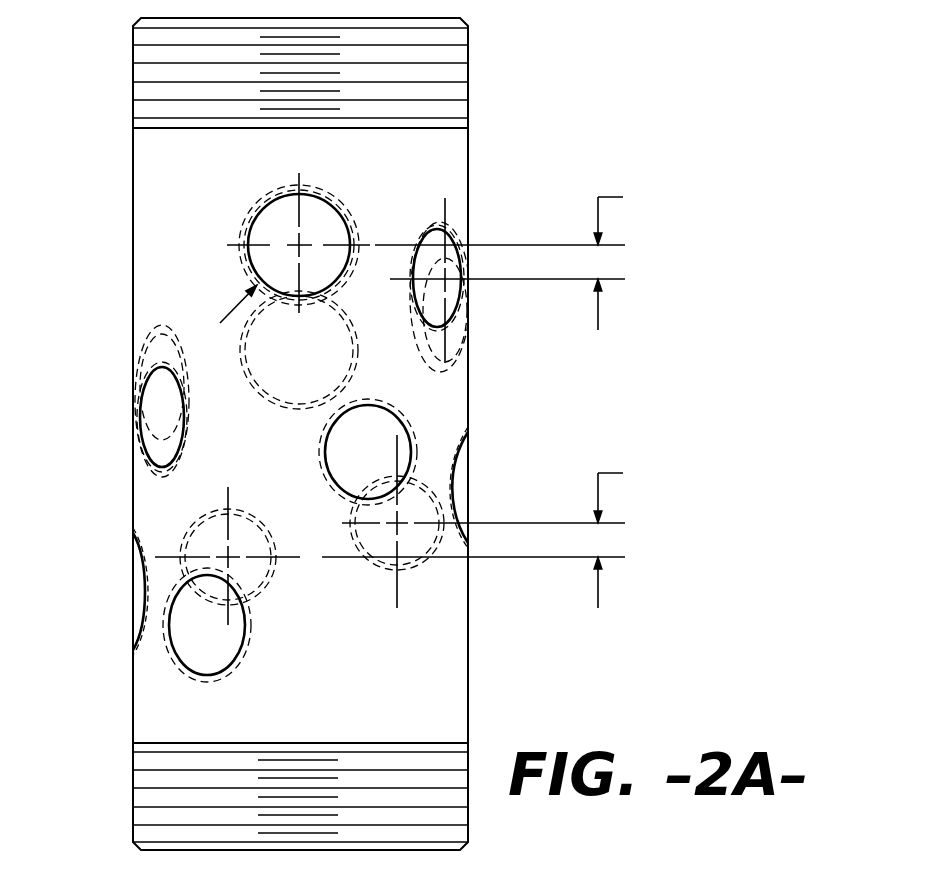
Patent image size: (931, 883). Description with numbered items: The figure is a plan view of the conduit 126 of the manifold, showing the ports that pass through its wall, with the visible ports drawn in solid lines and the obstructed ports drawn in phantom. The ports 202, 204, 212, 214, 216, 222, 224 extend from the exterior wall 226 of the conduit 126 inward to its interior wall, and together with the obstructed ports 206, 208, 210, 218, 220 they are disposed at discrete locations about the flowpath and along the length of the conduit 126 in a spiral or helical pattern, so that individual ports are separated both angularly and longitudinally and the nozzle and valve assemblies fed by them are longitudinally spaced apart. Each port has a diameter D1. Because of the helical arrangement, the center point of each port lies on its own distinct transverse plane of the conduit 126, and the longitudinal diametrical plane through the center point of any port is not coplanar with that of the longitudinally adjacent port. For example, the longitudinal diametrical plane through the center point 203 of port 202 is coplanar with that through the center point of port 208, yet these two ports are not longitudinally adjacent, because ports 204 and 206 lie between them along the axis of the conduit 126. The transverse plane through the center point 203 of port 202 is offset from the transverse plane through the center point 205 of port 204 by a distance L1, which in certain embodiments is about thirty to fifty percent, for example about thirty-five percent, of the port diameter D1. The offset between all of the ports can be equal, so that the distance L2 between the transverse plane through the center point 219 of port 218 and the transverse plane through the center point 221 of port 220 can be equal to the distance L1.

The conduit 126 is at (512, 74).
The port 202 is at (250, 227).
The center point of port 202 203 is at (297, 240).
The port 204 is at (456, 240).
The center point of port 204 205 is at (457, 243).
The obstructed port 206 is at (453, 347).
The obstructed port 208 is at (240, 348).
The obstructed port 210 is at (150, 328).
The port 212 is at (143, 373).
The port 214 is at (408, 432).
The port 216 is at (465, 463).
The obstructed port 218 is at (408, 567).
The center point of port 218 219 is at (405, 555).
The obstructed port 220 is at (228, 553).
The center point of port 220 221 is at (215, 530).
The port 222 is at (133, 595).
The port 224 is at (175, 653).
The exterior wall 226 is at (432, 683).
The port diameter D1 is at (345, 203).
The distance L1 is at (523, 255).
The distance L2 is at (498, 533).